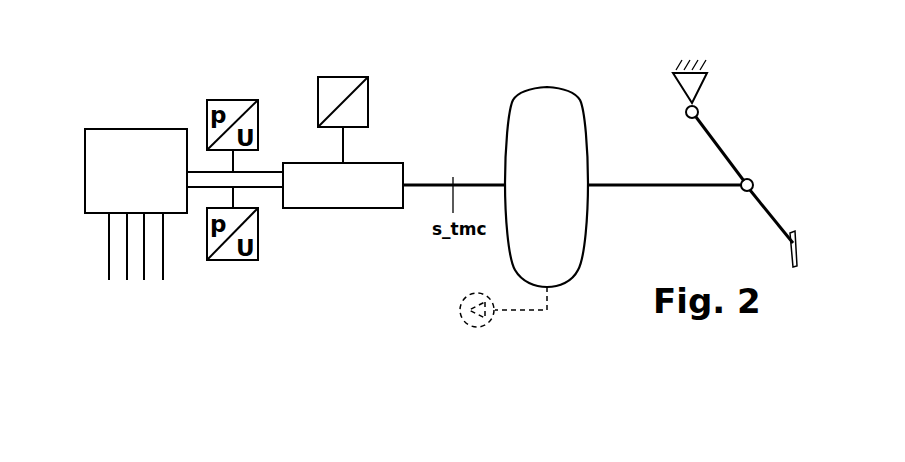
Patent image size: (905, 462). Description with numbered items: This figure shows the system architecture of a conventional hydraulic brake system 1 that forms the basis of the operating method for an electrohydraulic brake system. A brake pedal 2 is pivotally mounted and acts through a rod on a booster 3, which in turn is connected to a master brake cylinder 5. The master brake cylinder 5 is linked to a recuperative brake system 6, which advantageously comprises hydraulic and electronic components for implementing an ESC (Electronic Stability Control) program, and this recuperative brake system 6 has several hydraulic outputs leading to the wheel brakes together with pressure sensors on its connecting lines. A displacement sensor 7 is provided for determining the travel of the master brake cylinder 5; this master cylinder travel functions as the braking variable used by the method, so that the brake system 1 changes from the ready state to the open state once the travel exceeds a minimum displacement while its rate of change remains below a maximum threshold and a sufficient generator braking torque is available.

The hydraulic brake system 1 is at (538, 69).
The brake pedal 2 is at (722, 148).
The booster 3 is at (585, 120).
The master brake cylinder 5 is at (347, 208).
The recuperative brake system 6 is at (133, 129).
The displacement sensor 7 is at (368, 100).